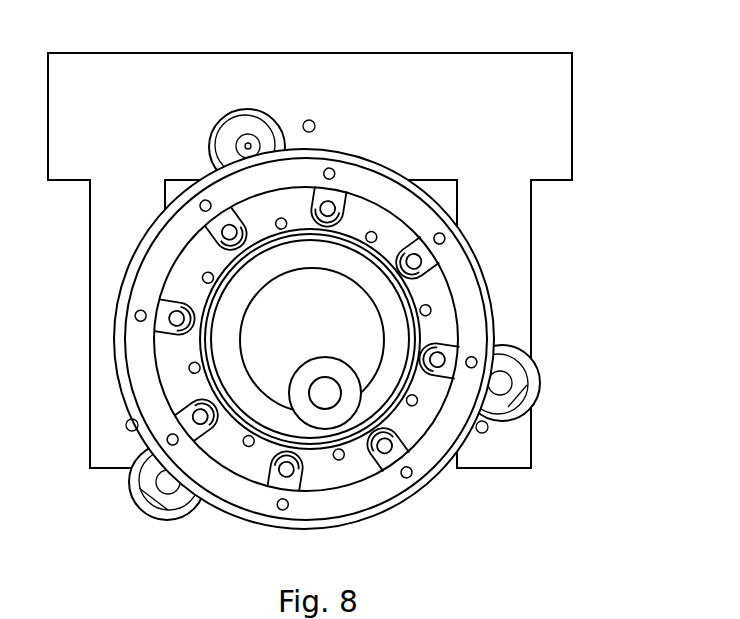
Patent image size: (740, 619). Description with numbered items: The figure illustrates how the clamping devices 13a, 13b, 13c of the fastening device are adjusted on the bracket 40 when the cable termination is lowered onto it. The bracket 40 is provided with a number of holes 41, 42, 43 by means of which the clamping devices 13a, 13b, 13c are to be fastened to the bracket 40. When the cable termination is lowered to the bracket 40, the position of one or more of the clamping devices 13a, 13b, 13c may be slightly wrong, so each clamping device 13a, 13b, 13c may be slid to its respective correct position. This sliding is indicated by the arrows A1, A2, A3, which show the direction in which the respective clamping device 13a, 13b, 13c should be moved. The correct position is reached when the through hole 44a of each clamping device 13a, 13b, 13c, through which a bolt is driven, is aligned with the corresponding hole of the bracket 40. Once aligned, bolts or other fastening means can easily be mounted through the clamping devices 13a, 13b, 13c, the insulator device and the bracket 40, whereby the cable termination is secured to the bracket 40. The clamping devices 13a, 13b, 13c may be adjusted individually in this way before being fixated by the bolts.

The clamping device 13a is at (205, 504).
The clamping device 13b is at (223, 118).
The clamping device 13c is at (500, 345).
The bracket 40 is at (559, 123).
The hole 41 is at (130, 425).
The hole 42 is at (315, 123).
The hole 43 is at (486, 433).
The through hole 44a is at (248, 147).
The arrow A1 is at (111, 460).
The arrow A2 is at (292, 93).
The arrow A3 is at (508, 440).